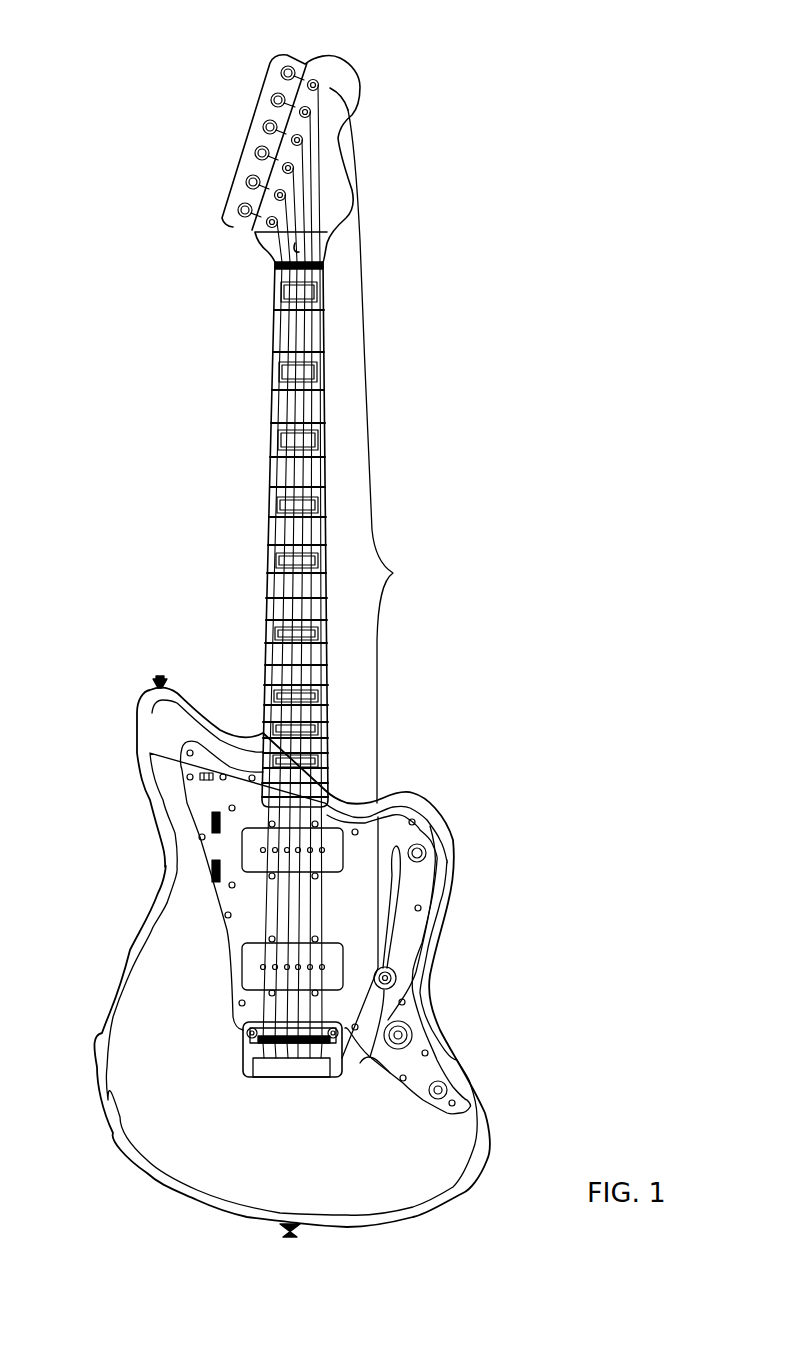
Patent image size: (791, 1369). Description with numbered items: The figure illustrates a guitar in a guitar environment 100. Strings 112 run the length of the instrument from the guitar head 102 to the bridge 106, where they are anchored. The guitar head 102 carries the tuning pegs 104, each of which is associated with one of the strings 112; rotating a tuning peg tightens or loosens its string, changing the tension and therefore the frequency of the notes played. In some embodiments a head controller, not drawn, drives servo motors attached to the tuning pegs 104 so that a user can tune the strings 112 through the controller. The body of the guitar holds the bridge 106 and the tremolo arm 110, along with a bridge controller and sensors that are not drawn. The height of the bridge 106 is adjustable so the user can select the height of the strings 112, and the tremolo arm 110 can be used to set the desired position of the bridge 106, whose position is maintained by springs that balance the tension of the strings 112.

The guitar environment 100 is at (587, 52).
The guitar head 102 is at (358, 78).
The tuning pegs 104 is at (249, 130).
The bridge 106 is at (243, 1030).
The tremolo arm 110 is at (397, 887).
The strings 112 is at (393, 573).